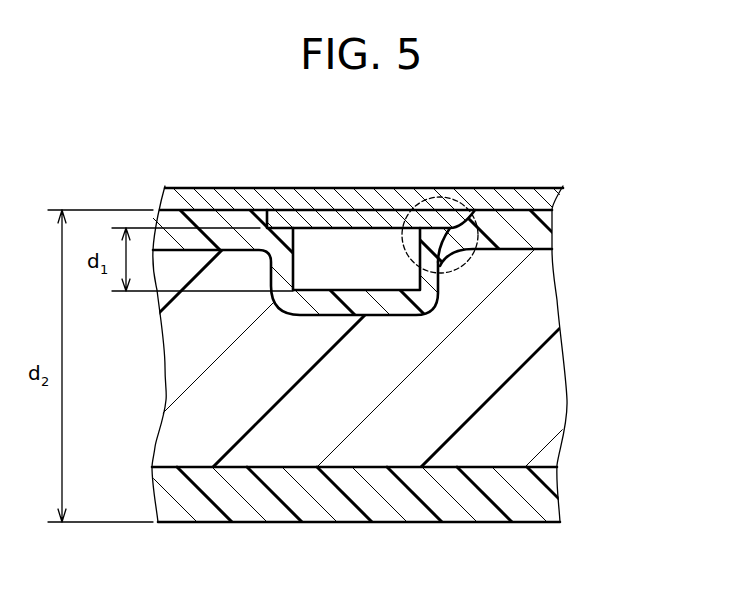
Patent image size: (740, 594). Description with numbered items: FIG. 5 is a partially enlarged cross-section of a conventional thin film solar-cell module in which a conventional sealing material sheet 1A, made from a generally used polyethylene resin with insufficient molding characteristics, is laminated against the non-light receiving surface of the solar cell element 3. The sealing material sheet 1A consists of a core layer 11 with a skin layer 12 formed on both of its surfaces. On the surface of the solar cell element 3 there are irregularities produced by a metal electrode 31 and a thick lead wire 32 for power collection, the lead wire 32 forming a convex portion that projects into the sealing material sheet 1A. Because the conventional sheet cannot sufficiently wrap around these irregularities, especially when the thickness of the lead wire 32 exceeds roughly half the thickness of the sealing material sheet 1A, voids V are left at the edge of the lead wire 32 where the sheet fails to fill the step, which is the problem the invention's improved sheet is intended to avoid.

The sealing material sheet 1A is at (639, 213).
The core layer 11 is at (530, 412).
The skin layer 12 is at (545, 230).
The solar cell element 3 is at (535, 206).
The metal electrode 31 is at (383, 220).
The lead wire 32 is at (354, 250).
The void V is at (470, 268).